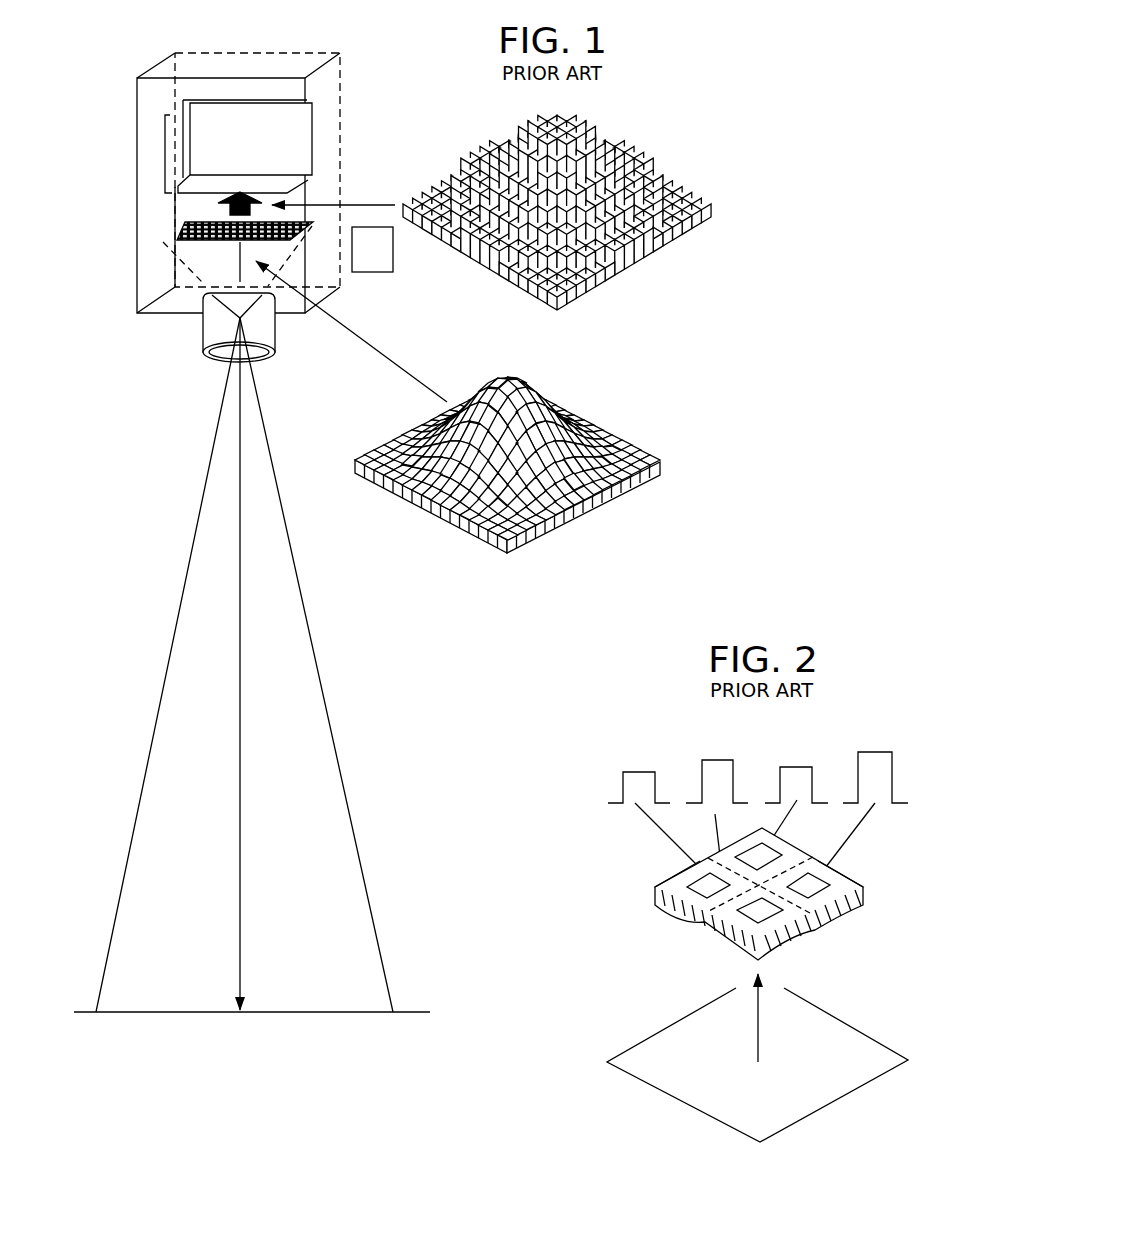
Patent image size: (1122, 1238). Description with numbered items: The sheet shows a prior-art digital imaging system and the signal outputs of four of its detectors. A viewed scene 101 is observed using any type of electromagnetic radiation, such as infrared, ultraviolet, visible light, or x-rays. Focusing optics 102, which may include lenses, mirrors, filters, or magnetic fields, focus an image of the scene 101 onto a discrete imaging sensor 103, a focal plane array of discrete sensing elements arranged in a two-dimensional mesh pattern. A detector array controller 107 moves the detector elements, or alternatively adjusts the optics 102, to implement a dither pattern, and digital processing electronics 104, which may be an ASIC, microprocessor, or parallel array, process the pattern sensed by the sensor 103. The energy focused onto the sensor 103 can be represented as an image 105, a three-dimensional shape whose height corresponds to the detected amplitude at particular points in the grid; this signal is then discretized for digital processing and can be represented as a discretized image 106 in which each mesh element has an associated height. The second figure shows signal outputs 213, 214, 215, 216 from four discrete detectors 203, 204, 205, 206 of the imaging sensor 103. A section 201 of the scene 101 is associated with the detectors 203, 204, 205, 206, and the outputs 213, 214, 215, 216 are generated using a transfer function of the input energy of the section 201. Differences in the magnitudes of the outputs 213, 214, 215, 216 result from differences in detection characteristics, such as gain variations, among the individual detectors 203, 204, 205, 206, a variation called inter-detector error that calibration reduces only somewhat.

In FIG. 1, the viewed scene 101 is at (365, 1013).
In FIG. 1, the focusing optics 102 is at (203, 348).
In FIG. 1, the discrete imaging sensor 103 is at (163, 240).
In FIG. 1, the digital processing electronics 104 is at (298, 142).
In FIG. 1, the image 105 is at (657, 465).
In FIG. 1, the discretized image 106 is at (667, 207).
In FIG. 1, the detector array controller 107 is at (302, 229).
In FIG. 2, the section of scene 201 is at (857, 1043).
In FIG. 2, the discrete detector 203 is at (656, 888).
In FIG. 2, the discrete detector 204 is at (787, 846).
In FIG. 2, the discrete detector 205 is at (863, 888).
In FIG. 2, the discrete detector 206 is at (737, 930).
In FIG. 2, the signal output 213 is at (737, 770).
In FIG. 2, the signal output 214 is at (820, 777).
In FIG. 2, the signal output 215 is at (897, 770).
In FIG. 2, the signal output 216 is at (663, 778).